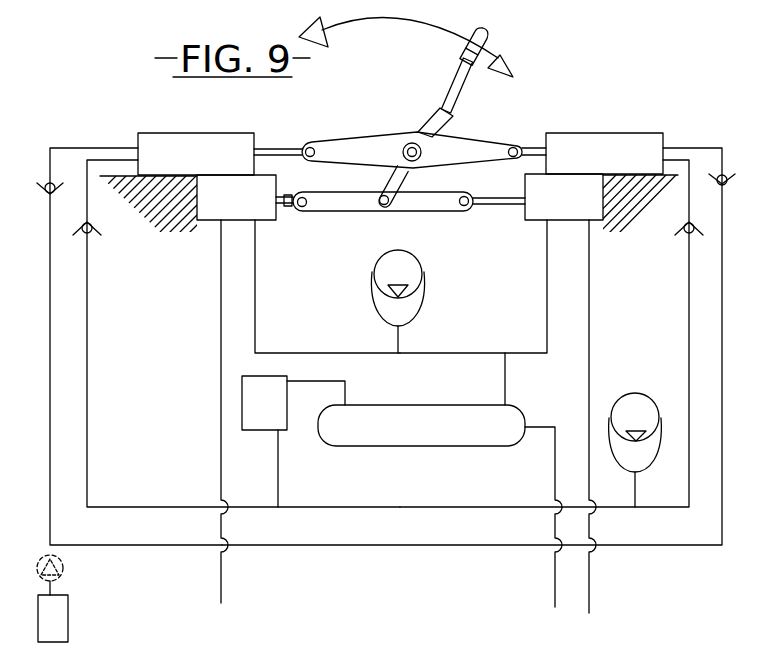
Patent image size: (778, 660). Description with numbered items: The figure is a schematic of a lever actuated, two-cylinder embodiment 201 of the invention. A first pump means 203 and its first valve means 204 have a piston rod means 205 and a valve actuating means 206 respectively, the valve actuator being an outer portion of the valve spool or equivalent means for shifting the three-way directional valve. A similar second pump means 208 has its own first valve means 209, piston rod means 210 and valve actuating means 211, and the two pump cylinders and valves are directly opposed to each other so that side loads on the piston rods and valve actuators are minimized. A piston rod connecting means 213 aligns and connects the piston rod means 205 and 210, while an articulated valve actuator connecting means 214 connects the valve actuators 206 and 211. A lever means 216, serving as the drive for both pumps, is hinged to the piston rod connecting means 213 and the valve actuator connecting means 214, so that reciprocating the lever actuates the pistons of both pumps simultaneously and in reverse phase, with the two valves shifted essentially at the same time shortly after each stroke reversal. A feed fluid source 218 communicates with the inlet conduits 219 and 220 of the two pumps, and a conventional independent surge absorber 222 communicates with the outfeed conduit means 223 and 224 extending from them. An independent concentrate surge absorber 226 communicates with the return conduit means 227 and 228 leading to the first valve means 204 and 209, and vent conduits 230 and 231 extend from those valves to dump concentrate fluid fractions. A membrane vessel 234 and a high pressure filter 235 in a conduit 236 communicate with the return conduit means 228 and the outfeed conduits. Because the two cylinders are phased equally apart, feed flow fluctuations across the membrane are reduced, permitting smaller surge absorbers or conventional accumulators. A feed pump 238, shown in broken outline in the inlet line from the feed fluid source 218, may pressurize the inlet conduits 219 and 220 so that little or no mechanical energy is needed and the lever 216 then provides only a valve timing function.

The multi-cylinder embodiment 201 is at (378, 139).
The first pump means 203 is at (167, 150).
The first valve means 204 is at (213, 220).
The piston rod means 205 is at (277, 149).
The valve actuating means 206 is at (281, 205).
The second pump means 208 is at (617, 133).
The first valve means 209 is at (588, 218).
The piston rod means 210 is at (532, 149).
The valve actuating means 211 is at (497, 204).
The piston rod connecting means 213 is at (472, 134).
The articulated valve actuator connecting means 214 is at (357, 204).
The lever means 216 is at (491, 42).
The feed fluid source 218 is at (54, 624).
The inlet conduit 219 is at (50, 276).
The inlet conduit 220 is at (722, 316).
The surge absorber 222 is at (678, 385).
The outfeed conduit means 223 is at (87, 434).
The outfeed conduit means 224 is at (689, 279).
The concentrate surge absorber 226 is at (372, 292).
The return conduit means 227 is at (255, 272).
The return conduit means 228 is at (547, 279).
The vent conduit 230 is at (221, 318).
The vent conduit 231 is at (590, 361).
The membrane vessel 234 is at (433, 426).
The high pressure filter 235 is at (242, 415).
The conduit 236 is at (280, 460).
The feed pump 238 is at (66, 566).